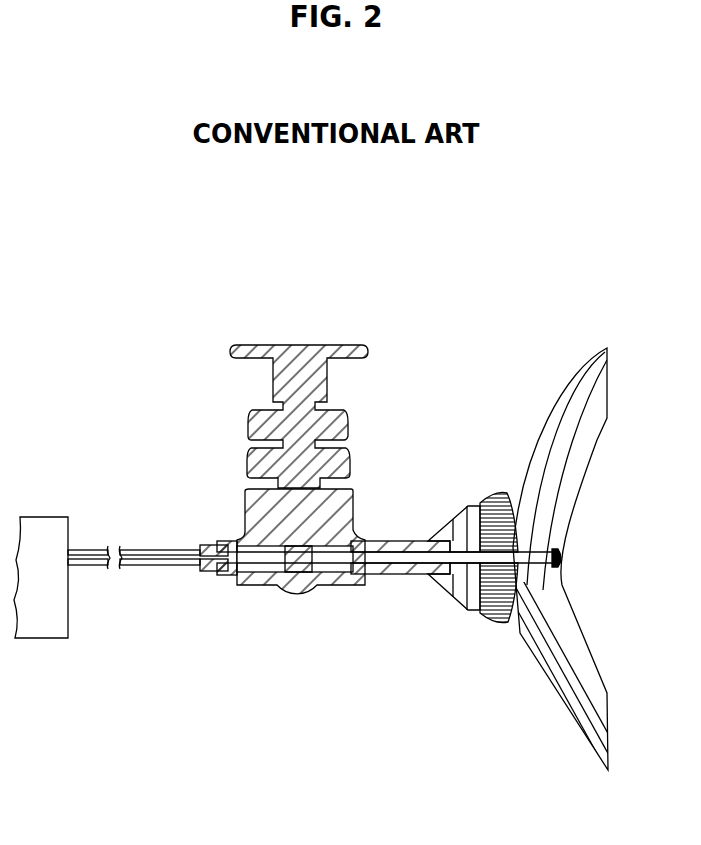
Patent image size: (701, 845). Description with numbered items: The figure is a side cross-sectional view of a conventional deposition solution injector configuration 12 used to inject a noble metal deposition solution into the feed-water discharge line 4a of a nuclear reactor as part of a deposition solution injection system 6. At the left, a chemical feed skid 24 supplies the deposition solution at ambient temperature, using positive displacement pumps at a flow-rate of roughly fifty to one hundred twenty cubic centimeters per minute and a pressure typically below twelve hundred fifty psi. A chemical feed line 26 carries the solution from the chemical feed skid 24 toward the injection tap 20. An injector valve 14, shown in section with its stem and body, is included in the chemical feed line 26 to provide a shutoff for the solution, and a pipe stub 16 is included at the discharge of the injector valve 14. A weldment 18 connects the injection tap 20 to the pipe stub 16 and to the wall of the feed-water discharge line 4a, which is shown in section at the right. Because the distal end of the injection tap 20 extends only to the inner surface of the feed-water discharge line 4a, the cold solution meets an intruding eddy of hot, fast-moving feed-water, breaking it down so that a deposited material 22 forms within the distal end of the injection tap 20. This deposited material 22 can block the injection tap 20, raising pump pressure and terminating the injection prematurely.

The feed-water discharge line 4a is at (568, 360).
The noble metal deposition solution injection system 6 is at (570, 556).
The deposition solution injector configuration 12 is at (283, 608).
The injector valve 14 is at (312, 334).
The pipe stub 16 is at (398, 535).
The weldment 18 is at (481, 492).
The injection tap 20 is at (553, 575).
The deposited material 22 is at (566, 547).
The chemical feed skid 24 is at (55, 640).
The chemical feed line 26 is at (88, 548).